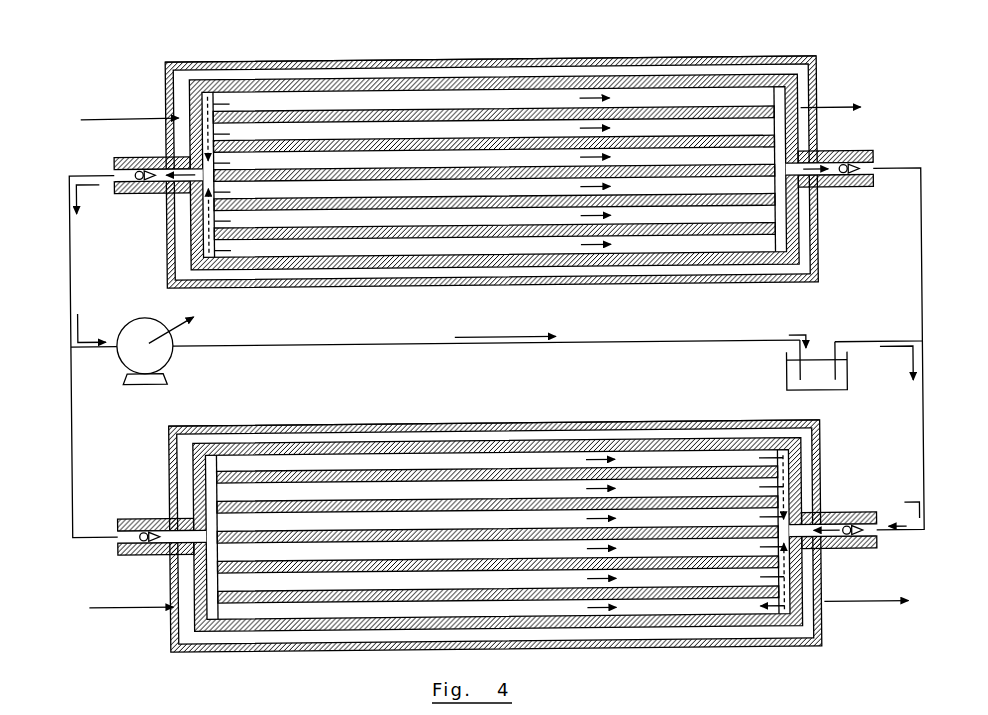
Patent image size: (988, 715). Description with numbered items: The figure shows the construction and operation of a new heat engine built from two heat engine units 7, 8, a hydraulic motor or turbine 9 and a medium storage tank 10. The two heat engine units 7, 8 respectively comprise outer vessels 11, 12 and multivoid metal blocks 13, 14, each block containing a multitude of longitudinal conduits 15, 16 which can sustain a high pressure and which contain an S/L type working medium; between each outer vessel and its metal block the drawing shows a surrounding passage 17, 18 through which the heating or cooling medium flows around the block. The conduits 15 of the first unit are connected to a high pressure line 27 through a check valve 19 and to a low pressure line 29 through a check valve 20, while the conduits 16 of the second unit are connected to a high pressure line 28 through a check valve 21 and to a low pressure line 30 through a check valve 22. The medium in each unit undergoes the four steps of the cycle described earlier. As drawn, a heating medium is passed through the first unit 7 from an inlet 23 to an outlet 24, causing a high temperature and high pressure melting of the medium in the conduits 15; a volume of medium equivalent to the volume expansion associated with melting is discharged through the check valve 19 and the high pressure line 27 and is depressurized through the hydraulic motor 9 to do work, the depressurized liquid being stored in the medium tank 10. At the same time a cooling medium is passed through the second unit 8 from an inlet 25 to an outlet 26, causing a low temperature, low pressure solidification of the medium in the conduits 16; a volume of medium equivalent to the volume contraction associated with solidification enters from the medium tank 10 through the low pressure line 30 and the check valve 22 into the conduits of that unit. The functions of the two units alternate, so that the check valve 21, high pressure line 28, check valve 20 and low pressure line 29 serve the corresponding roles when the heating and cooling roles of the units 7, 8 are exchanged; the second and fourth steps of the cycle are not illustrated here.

The heat engine unit 7 is at (470, 59).
The heat engine unit 8 is at (412, 423).
The hydraulic motor 9 is at (145, 320).
The medium storage tank 10 is at (811, 371).
The outer vessel 11 is at (557, 59).
The outer vessel 12 is at (478, 423).
The multivoid metal block 13 is at (615, 78).
The multivoid metal block 14 is at (540, 441).
The conduits 15 is at (658, 130).
The conduits 16 is at (654, 491).
The heating medium passage 17 is at (343, 73).
The cooling medium passage 18 is at (325, 431).
The check valve 19 is at (141, 178).
The check valve 20 is at (846, 178).
The check valve 21 is at (142, 529).
The check valve 22 is at (846, 526).
The heating medium inlet 23 is at (166, 118).
The heating medium outlet 24 is at (818, 112).
The cooling medium inlet 25 is at (101, 607).
The cooling medium outlet 26 is at (891, 597).
The high pressure line 27 is at (70, 298).
The high pressure line 28 is at (71, 451).
The low pressure line 29 is at (922, 252).
The low pressure line 30 is at (922, 430).